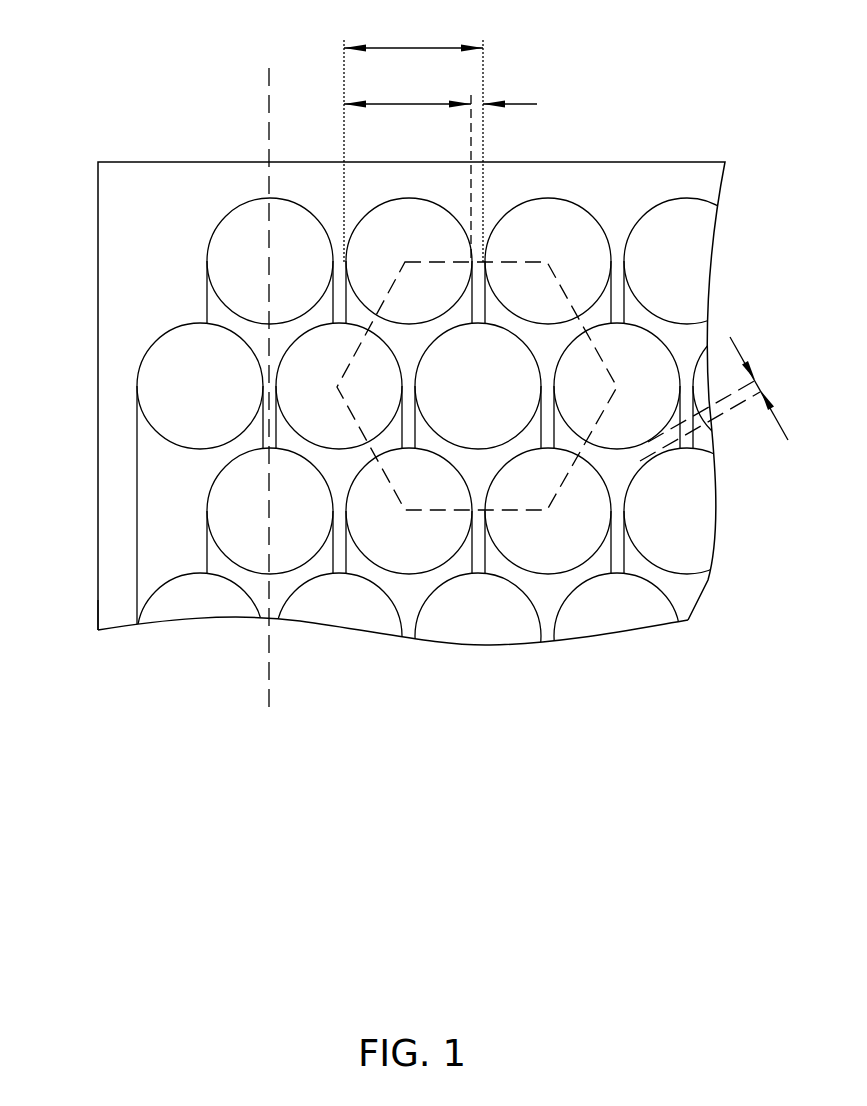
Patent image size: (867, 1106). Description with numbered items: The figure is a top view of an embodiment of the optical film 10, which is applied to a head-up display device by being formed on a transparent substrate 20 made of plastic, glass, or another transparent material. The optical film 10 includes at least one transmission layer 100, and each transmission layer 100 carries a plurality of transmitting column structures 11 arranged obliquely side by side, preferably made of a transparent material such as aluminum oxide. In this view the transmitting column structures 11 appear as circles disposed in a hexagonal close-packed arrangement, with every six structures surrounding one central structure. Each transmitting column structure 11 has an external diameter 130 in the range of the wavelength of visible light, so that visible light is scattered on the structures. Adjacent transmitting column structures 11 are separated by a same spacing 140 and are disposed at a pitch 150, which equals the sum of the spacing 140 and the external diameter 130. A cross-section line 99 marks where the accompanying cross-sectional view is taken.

The optical film 10 is at (112, 101).
The transmission layer 100 is at (212, 193).
The transmitting column structures 11 is at (163, 367).
The substrate 20 is at (115, 599).
The cross-section line 99 is at (271, 408).
The external diameter 130 is at (407, 169).
The spacing 140 is at (480, 102).
The pitch 150 is at (413, 142).